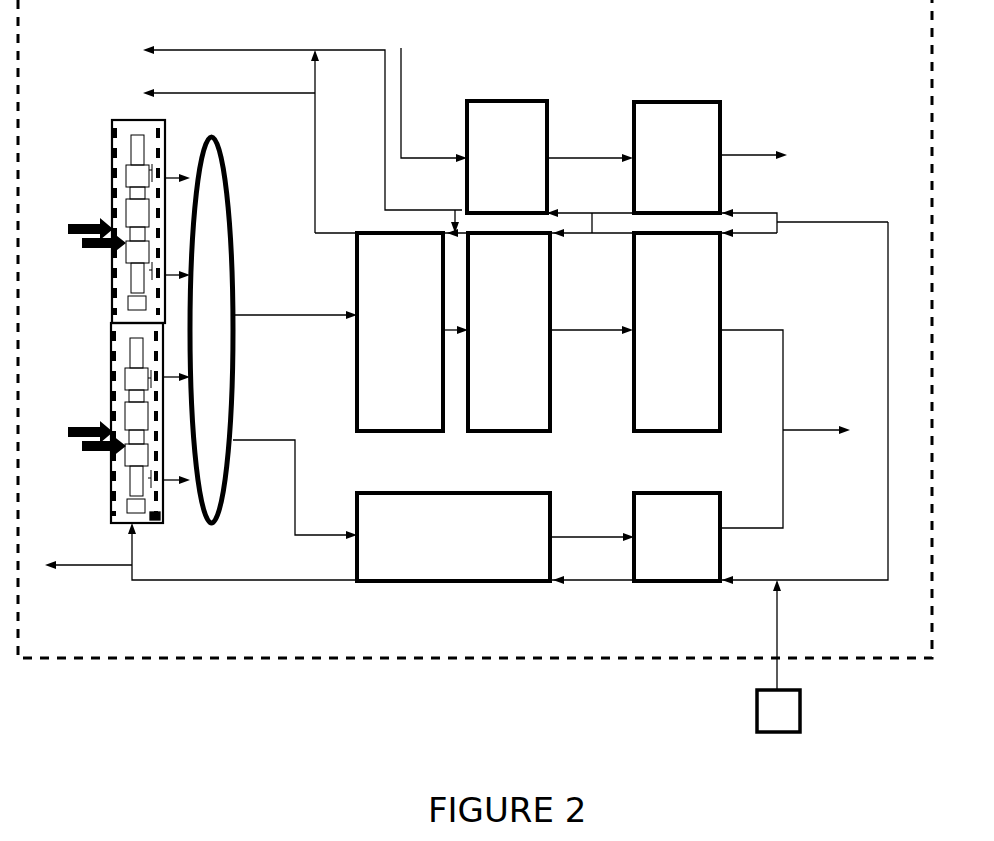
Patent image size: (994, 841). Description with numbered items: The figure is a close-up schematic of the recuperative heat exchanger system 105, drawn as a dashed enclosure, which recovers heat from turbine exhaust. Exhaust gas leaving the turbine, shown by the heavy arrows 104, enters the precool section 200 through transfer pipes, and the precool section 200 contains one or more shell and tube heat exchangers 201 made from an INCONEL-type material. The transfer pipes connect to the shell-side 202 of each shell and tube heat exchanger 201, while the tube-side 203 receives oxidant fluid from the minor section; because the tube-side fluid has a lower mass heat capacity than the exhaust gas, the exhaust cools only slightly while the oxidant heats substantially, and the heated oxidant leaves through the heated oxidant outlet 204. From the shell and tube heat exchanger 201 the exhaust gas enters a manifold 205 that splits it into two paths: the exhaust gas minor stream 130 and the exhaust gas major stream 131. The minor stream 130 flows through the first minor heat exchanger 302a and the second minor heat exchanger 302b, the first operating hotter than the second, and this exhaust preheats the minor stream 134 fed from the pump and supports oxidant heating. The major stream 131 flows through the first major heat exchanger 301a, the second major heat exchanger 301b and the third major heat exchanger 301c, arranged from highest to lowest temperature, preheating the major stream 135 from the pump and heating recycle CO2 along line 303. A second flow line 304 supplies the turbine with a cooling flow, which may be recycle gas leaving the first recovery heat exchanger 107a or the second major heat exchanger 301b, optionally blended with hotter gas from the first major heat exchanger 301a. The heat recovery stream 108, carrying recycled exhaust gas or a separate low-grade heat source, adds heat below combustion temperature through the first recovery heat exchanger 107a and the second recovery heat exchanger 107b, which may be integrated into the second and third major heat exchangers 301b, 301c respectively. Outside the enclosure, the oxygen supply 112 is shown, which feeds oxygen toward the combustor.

The recuperative heat exchanger system 105 is at (230, 660).
The precool section 200 is at (112, 283).
The shell and tube heat exchanger 201 is at (128, 182).
The shell-side 202 is at (106, 490).
The tube-side 203 is at (162, 522).
The exhaust gases 104 is at (76, 342).
The manifold 205 is at (198, 350).
The major flow path 131 is at (295, 299).
The minor flow path 130 is at (295, 471).
The second flow line 304 is at (201, 53).
The line 303 is at (201, 96).
The heat recovery stream 108 is at (432, 88).
The first recovery heat exchanger 107a is at (539, 170).
The second recovery heat exchanger 107b is at (710, 170).
The first major heat exchanger 301a is at (367, 345).
The second major heat exchanger 301b is at (543, 345).
The third major heat exchanger 301c is at (644, 345).
The first minor heat exchanger 302a is at (418, 553).
The second minor heat exchanger 302b is at (644, 553).
The major stream 135 is at (852, 222).
The minor stream 134 is at (888, 478).
The heated oxidant outlet 204 is at (80, 550).
The oxygen supply 112 is at (765, 721).